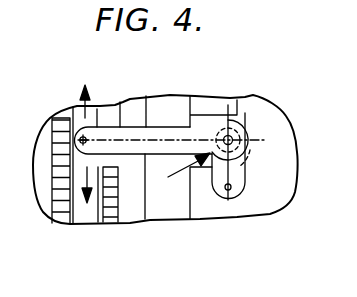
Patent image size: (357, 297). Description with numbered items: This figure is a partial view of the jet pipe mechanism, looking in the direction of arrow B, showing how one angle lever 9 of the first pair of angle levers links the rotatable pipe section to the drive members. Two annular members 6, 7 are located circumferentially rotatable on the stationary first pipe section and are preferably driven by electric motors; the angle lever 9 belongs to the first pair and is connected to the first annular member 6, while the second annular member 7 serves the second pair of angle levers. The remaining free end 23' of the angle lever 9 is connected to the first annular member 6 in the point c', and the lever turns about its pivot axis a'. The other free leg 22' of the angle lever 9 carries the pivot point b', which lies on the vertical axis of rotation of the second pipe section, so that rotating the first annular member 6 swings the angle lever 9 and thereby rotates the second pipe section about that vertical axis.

The remaining free end 23' is at (144, 108).
The first annular member 6 is at (86, 210).
The second annular member 7 is at (140, 210).
The angle lever 9 is at (178, 171).
The connection points c' is at (62, 111).
The main pivot axis a' is at (244, 138).
The free leg 22' is at (253, 156).
The pivot points b' is at (246, 220).